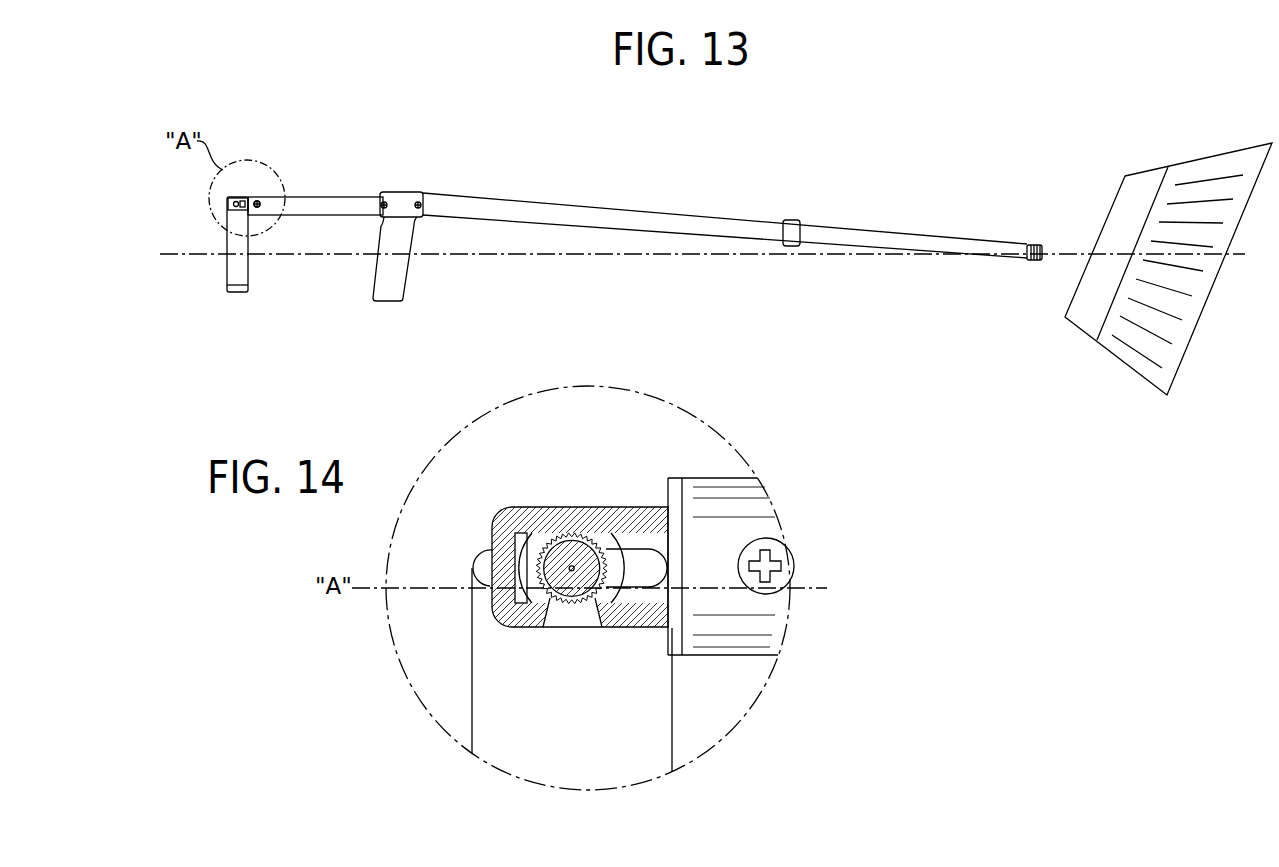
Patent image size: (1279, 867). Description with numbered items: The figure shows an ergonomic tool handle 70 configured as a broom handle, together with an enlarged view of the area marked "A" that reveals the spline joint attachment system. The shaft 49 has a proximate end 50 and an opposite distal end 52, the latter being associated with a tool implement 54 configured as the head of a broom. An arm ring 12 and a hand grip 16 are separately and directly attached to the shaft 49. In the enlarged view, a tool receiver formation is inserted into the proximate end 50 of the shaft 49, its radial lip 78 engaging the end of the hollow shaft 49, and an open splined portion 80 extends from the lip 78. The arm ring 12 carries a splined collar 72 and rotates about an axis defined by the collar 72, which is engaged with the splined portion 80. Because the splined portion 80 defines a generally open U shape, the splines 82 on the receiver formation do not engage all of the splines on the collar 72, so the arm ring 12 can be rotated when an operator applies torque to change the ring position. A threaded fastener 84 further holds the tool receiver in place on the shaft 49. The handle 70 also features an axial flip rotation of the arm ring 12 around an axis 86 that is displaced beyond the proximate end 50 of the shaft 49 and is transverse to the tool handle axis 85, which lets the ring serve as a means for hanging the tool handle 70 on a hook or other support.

In FIG. 13, the arm ring 12 is at (238, 246).
In FIG. 14, the arm ring 12 is at (583, 760).
In FIG. 13, the hand grip 16 is at (395, 275).
In FIG. 13, the shaft 49 is at (615, 217).
In FIG. 13, the proximate end 50 is at (272, 208).
In FIG. 14, the proximate end 50 is at (718, 532).
In FIG. 13, the distal end 52 is at (1015, 250).
In FIG. 13, the tool implement 54 is at (1188, 175).
In FIG. 13, the ergonomic tool handle 70 is at (359, 154).
In FIG. 14, the ergonomic tool handle 70 is at (429, 434).
In FIG. 14, the splined collar 72 is at (570, 556).
In FIG. 14, the radial lip 78 is at (677, 487).
In FIG. 14, the open splined portion 80 is at (643, 622).
In FIG. 14, the splines 82 is at (586, 524).
In FIG. 13, the threaded fastener 84 is at (258, 201).
In FIG. 14, the threaded fastener 84 is at (782, 553).
In FIG. 13, the tool handle axis 85 is at (177, 262).
In FIG. 14, the axis 86 is at (572, 574).